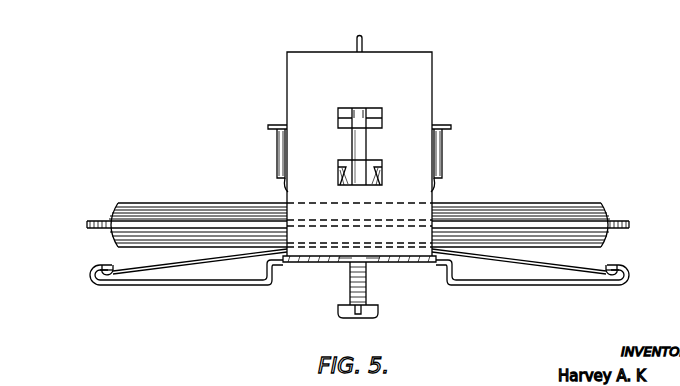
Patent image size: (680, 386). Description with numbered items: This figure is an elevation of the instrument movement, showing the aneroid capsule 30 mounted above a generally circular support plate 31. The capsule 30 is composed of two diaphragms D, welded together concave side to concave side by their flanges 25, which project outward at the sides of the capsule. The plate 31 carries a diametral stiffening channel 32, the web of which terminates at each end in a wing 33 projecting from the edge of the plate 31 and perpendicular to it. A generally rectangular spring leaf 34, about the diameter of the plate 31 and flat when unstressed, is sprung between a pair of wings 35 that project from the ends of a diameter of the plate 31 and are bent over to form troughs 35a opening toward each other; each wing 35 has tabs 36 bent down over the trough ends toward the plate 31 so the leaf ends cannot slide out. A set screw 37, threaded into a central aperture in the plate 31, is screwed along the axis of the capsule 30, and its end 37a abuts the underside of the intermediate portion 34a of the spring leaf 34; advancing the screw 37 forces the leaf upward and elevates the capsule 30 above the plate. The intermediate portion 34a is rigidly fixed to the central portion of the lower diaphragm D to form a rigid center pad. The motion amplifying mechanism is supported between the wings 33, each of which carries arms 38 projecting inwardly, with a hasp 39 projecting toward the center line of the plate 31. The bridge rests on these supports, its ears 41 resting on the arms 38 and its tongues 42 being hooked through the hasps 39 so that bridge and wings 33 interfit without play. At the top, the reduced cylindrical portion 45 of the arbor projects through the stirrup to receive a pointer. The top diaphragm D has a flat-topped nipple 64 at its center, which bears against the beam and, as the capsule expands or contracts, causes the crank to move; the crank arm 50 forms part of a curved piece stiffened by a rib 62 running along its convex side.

The capsule 30 is at (549, 190).
The wing 33 is at (365, 85).
The reduced cylindrical portion 45 is at (363, 40).
The ear 41 is at (276, 127).
The arm 38 is at (278, 154).
The arm 50 is at (372, 118).
The rib 62 is at (352, 117).
The hasp 39 is at (370, 152).
The tongue 42 is at (352, 152).
The nipple 64 is at (378, 178).
The diaphragm D is at (118, 205).
The flange 25 is at (621, 219).
The diametral stiffening channel 32 is at (284, 263).
The support plate 31 is at (520, 284).
The spring leaf 34 is at (208, 264).
The intermediate portion 34a is at (345, 263).
The end of screw 37a is at (376, 263).
The set screw 37 is at (366, 312).
The wing 35 is at (88, 273).
The trough 35a is at (101, 276).
The tab 36 is at (125, 272).